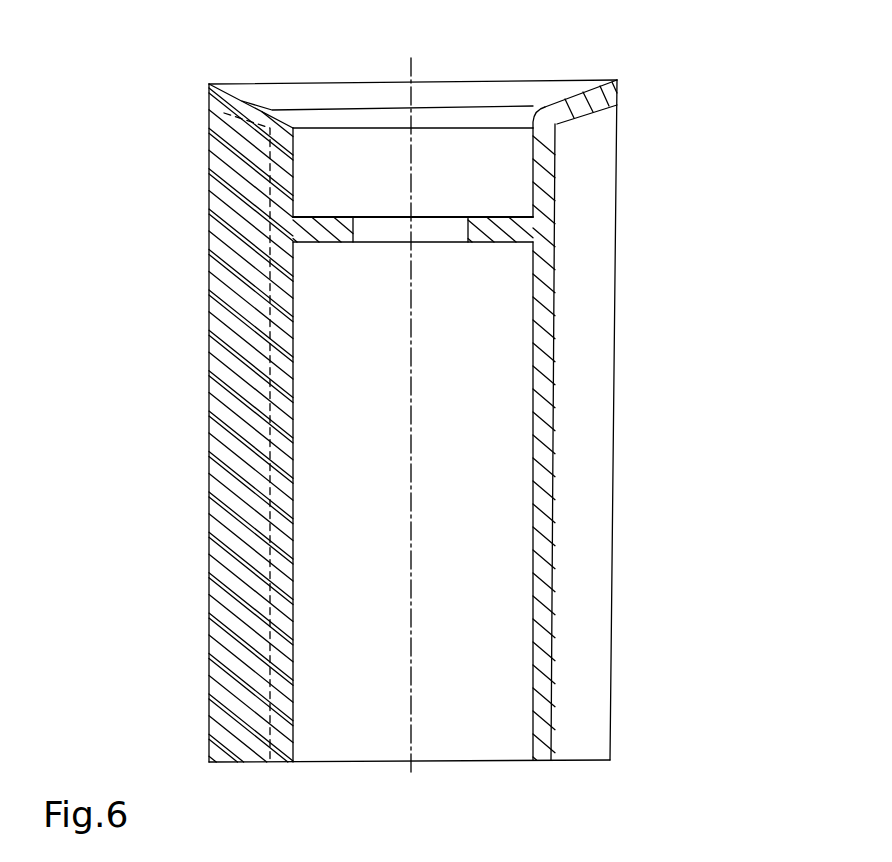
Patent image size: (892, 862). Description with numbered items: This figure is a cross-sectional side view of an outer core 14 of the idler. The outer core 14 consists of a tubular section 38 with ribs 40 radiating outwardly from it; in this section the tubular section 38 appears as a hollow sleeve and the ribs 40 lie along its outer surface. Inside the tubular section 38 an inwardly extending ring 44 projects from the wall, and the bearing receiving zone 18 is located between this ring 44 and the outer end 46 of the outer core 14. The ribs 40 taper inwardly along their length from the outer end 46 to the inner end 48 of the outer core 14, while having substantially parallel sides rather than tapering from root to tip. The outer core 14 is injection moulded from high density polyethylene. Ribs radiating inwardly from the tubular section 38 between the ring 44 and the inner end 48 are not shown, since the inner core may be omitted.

The outer core 14 is at (461, 419).
The bearing receiving zone 18 is at (482, 153).
The tubular section 38 is at (543, 453).
The ribs 40 is at (615, 612).
The inwardly extending ring 44 is at (497, 243).
The outer end 46 is at (495, 80).
The inner end 48 is at (577, 760).